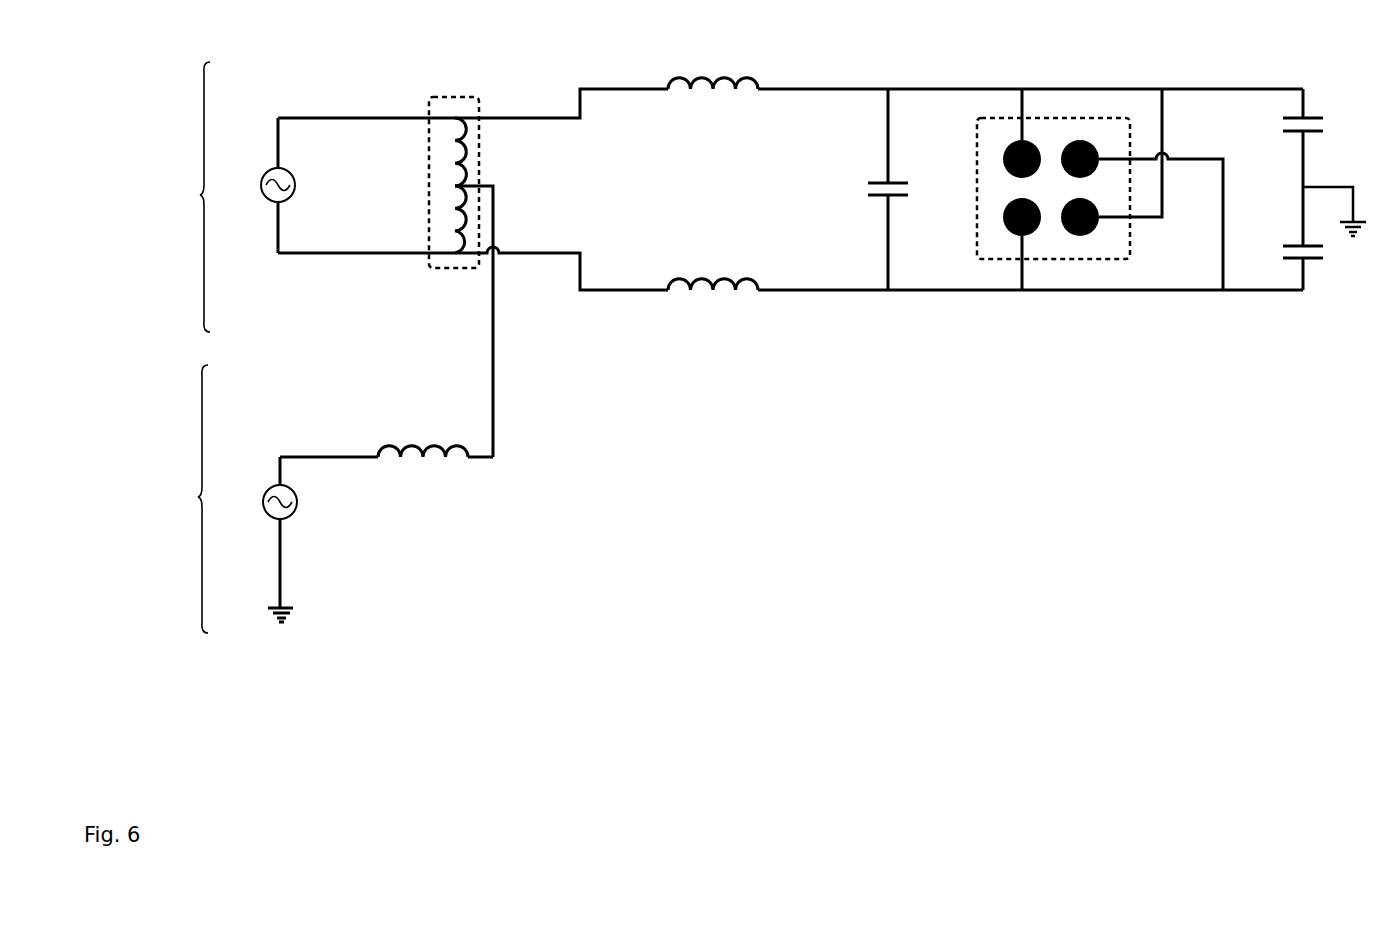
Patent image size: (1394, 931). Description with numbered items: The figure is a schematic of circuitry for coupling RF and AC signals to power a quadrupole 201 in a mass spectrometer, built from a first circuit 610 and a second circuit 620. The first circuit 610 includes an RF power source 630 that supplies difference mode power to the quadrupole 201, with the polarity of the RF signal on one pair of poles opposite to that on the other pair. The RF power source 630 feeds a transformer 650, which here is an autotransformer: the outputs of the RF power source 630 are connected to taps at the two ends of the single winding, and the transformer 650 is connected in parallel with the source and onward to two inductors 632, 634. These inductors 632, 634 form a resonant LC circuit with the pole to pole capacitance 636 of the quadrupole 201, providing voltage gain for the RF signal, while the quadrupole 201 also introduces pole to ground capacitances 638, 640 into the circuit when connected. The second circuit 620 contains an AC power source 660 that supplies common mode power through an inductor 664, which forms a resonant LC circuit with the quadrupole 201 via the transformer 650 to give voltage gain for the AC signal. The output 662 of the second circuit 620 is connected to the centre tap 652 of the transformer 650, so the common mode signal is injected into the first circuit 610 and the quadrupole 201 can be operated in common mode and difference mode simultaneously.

The first circuit 610 is at (177, 197).
The second circuit 620 is at (176, 499).
The RF power source 630 is at (264, 172).
The inductor 632 is at (722, 80).
The inductor 634 is at (727, 283).
The pole to pole capacitance 636 is at (876, 181).
The pole to ground capacitance 638 is at (1313, 117).
The pole to ground capacitance 640 is at (1320, 259).
The transformer 650 is at (428, 107).
The centre tap 652 is at (466, 187).
The AC power source 660 is at (265, 491).
The output 662 is at (490, 427).
The inductor 664 is at (418, 453).
The quadrupole 201 is at (975, 150).